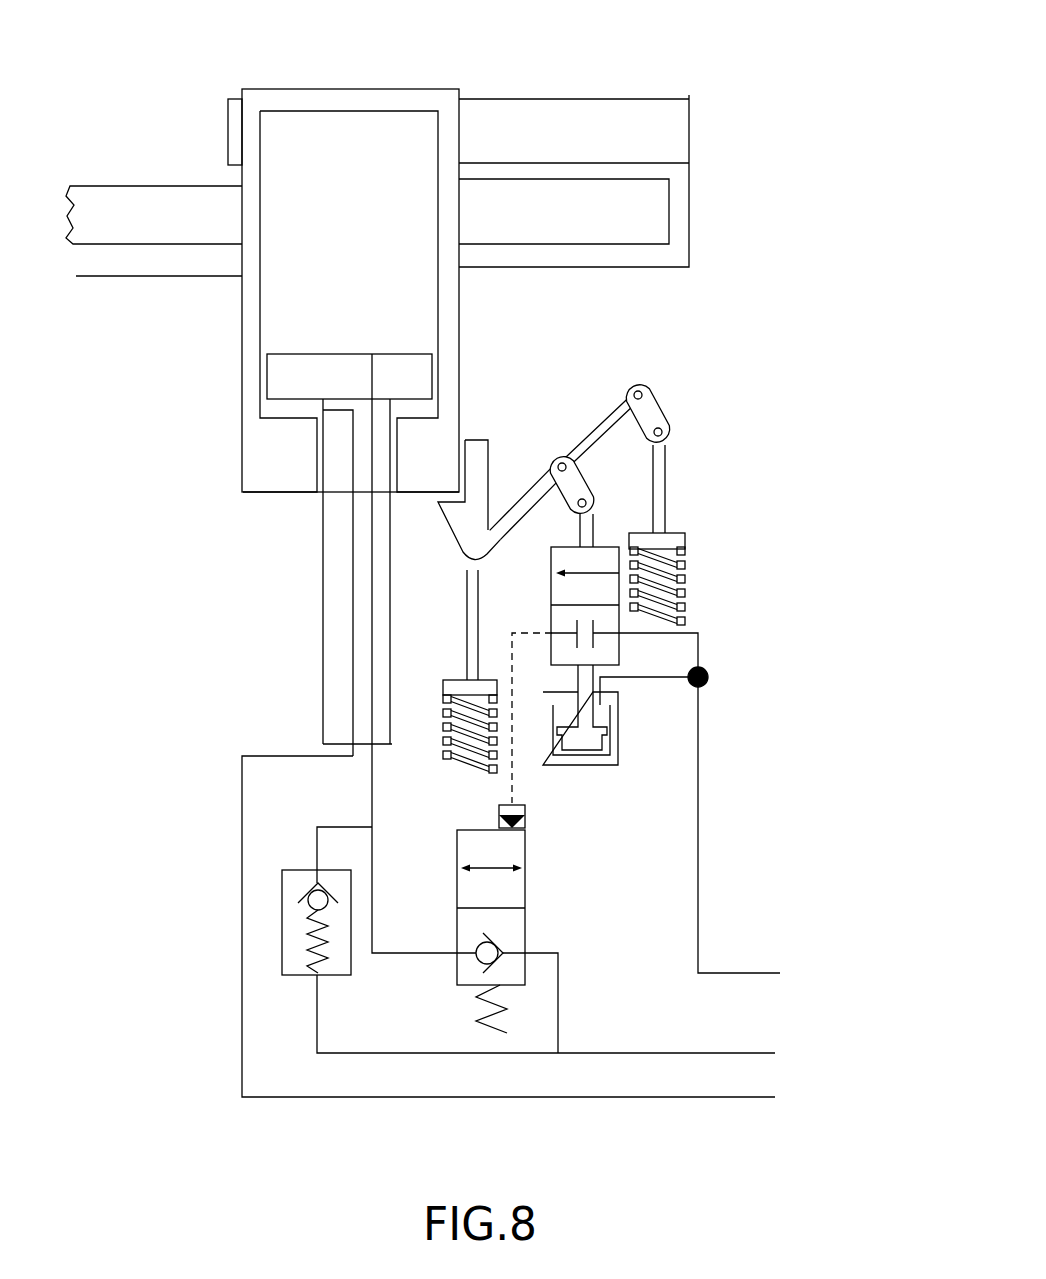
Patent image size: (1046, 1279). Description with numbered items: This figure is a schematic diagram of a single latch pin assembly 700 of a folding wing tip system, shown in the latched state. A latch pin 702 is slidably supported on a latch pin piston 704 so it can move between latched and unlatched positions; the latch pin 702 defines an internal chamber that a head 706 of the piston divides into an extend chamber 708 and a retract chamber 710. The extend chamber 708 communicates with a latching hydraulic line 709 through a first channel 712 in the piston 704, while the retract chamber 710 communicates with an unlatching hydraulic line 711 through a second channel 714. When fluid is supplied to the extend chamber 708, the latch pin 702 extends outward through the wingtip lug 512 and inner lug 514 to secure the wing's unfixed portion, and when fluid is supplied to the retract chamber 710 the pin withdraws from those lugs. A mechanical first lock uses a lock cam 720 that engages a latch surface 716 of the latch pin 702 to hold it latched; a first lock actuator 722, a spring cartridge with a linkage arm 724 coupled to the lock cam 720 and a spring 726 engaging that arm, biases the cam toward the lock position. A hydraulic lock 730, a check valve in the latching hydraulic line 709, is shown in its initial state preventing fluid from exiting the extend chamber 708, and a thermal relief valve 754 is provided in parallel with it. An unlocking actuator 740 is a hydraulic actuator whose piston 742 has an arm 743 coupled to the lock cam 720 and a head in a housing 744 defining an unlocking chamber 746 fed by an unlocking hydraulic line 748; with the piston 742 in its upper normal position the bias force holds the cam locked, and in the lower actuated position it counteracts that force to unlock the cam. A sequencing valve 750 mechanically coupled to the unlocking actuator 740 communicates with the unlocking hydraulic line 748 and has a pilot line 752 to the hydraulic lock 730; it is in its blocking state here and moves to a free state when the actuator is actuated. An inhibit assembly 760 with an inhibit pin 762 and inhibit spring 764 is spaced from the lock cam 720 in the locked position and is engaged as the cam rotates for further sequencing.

The latch pin assembly 700 is at (344, 247).
The latch pin 702 is at (402, 84).
The wingtip lug 512 is at (137, 210).
The inner lug 514 is at (573, 132).
The latch pin piston 704 is at (323, 617).
The head 706 is at (287, 375).
The extend chamber 708 is at (365, 246).
The latching hydraulic line 709 is at (372, 793).
The retract chamber 710 is at (275, 410).
The unlatching hydraulic line 711 is at (242, 1018).
The first channel 712 is at (370, 510).
The second channel 714 is at (353, 555).
The latch surface 716 is at (428, 490).
The lock cam 720 is at (451, 527).
The first lock actuator 722 is at (683, 512).
The linkage arm 724 is at (658, 463).
The spring 726 is at (682, 602).
The hydraulic lock 730 is at (537, 916).
The unlocking actuator 740 is at (594, 775).
The piston 742 is at (577, 743).
The arm 743 is at (600, 527).
The housing 744 is at (620, 702).
The unlocking chamber 746 is at (598, 718).
The unlocking hydraulic line 748 is at (697, 803).
The sequencing valve 750 is at (545, 586).
The pilot line 752 is at (512, 637).
The thermal relief valve 754 is at (330, 975).
The inhibit assembly 760 is at (458, 665).
The inhibit pin 762 is at (467, 610).
The inhibit spring 764 is at (447, 752).